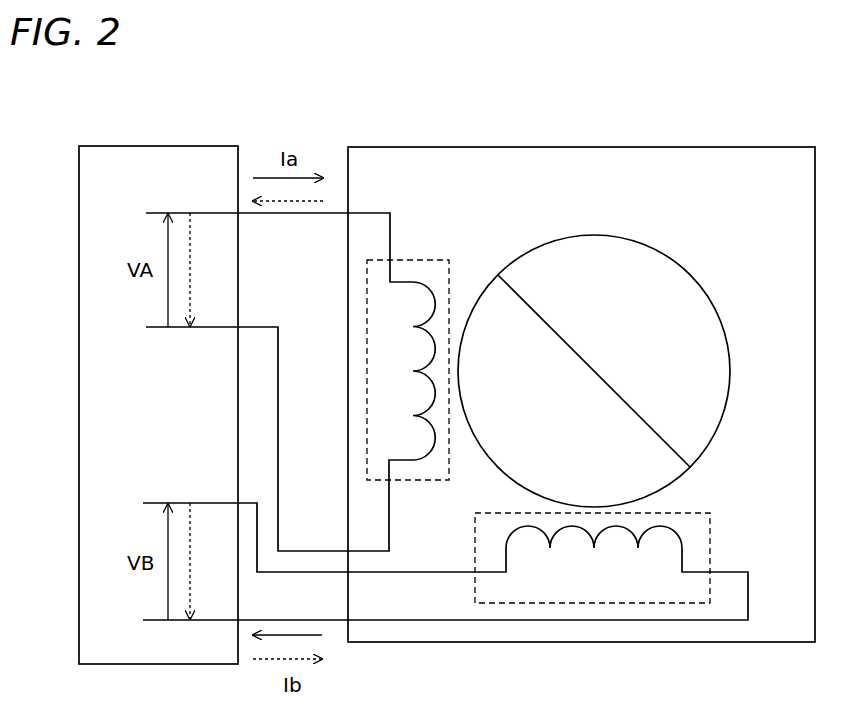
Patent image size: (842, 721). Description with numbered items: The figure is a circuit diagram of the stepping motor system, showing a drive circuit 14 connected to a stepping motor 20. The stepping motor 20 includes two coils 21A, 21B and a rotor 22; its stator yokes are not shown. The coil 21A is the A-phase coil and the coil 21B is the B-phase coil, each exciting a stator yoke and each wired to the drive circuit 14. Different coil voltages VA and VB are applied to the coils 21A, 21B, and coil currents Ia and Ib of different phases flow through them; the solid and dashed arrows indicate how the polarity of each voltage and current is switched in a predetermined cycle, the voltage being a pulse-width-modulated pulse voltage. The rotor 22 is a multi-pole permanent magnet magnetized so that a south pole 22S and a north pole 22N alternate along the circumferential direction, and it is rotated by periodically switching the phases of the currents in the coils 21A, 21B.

The drive circuit 14 is at (149, 145).
The stepping motor 20 is at (547, 146).
The coil 21A is at (413, 258).
The coil 21B is at (712, 540).
The rotor 22 is at (614, 363).
The north pole 22N is at (642, 270).
The south pole 22S is at (514, 460).